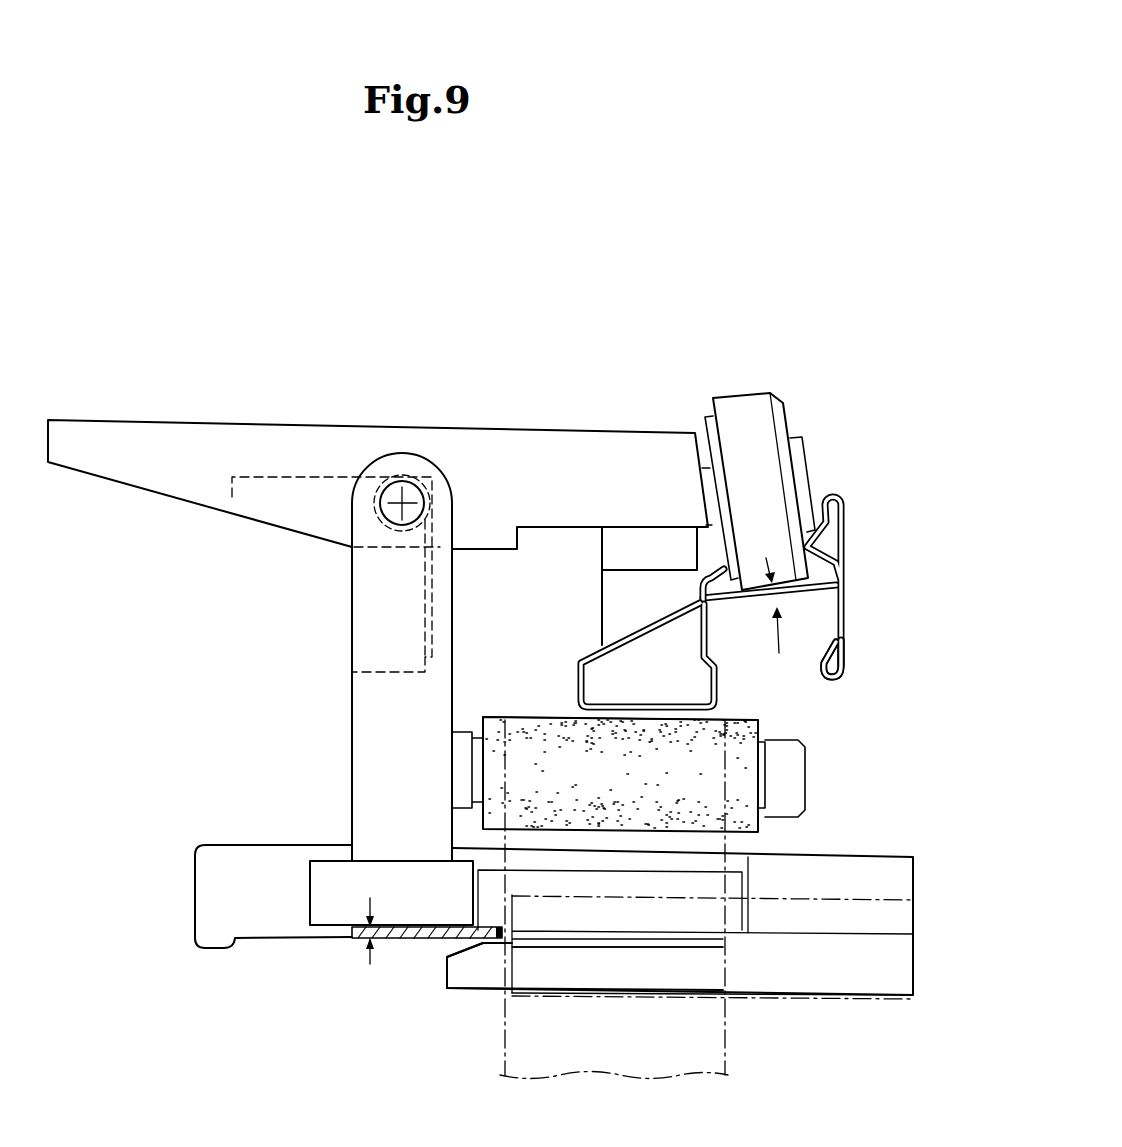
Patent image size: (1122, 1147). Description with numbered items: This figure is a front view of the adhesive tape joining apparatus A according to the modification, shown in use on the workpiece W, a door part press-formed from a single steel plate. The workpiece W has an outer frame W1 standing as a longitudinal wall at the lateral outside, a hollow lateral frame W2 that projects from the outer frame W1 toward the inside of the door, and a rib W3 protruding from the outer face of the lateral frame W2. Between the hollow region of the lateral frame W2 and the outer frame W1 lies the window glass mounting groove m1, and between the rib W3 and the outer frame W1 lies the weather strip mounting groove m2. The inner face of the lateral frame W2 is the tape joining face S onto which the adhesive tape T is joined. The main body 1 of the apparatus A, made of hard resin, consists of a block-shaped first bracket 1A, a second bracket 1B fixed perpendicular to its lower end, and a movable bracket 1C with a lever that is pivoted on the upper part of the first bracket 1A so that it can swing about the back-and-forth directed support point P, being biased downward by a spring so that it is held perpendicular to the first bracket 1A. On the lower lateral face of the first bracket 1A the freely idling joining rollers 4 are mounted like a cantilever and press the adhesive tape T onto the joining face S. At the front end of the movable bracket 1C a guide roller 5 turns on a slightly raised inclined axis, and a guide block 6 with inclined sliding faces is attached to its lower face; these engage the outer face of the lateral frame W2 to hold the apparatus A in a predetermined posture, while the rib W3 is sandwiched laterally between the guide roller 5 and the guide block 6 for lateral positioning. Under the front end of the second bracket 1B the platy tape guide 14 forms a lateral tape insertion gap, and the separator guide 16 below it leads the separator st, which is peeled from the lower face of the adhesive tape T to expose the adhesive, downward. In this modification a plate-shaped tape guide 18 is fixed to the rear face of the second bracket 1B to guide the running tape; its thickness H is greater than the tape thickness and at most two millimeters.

The adhesive tape joining apparatus A is at (345, 340).
The main body 1 is at (344, 651).
The first bracket 1A is at (357, 740).
The second bracket 1B is at (310, 898).
The movable bracket 1C is at (586, 432).
The support point P is at (393, 508).
The joining rollers 4 is at (497, 715).
The tape joining face S is at (637, 730).
The guide roller 5 is at (748, 392).
The guide block 6 is at (602, 604).
The workpiece W is at (858, 526).
The outer frame W1 is at (846, 660).
The lateral frame W2 is at (580, 690).
The rib W3 is at (703, 578).
The window glass mounting groove m1 is at (780, 654).
The weather strip mounting groove m2 is at (760, 556).
The adhesive tape T is at (728, 845).
The thickness of the tape guide H is at (355, 940).
The tape guide 18 is at (420, 940).
The tape guide 14 is at (470, 990).
The separator guide 16 is at (623, 993).
The separator st is at (505, 1052).